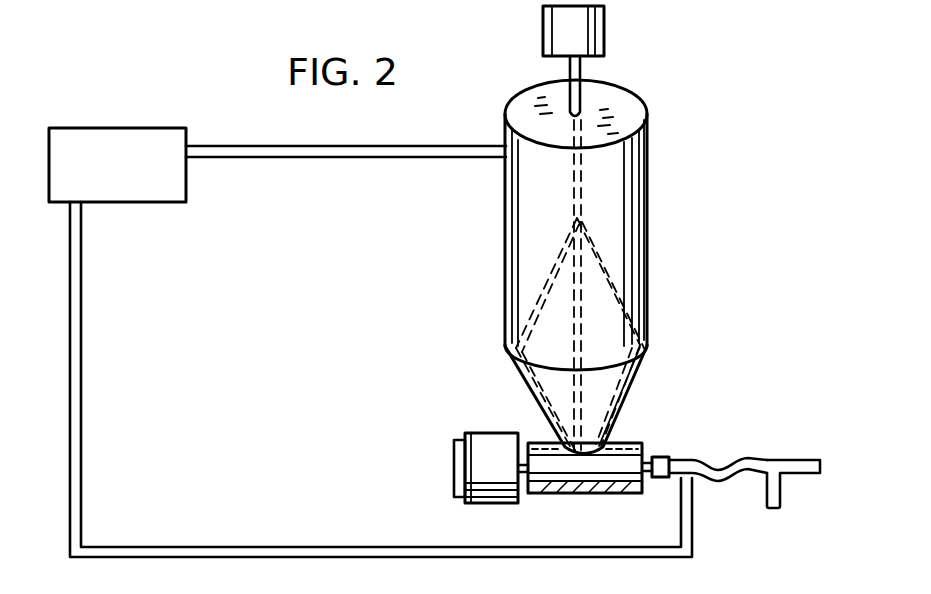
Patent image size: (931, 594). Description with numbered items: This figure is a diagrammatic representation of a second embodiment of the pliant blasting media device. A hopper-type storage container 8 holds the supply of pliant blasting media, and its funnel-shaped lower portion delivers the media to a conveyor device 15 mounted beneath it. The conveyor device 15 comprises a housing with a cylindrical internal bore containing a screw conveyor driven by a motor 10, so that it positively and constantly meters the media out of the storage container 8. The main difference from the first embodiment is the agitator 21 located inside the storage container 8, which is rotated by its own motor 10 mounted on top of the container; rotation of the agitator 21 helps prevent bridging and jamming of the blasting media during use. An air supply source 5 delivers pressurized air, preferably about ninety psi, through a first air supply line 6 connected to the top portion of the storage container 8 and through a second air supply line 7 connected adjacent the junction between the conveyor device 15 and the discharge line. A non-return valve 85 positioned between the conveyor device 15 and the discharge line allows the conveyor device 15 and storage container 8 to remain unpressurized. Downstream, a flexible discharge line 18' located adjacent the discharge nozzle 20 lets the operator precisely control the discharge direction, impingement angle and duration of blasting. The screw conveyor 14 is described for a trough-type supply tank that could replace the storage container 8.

The air supply source 5 is at (118, 127).
The first air supply line 6 is at (348, 145).
The second air supply line 7 is at (307, 547).
The storage container 8 is at (505, 265).
The motor 10 is at (604, 40).
The screw conveyor 14 is at (618, 445).
The conveyor device 15 is at (609, 495).
The flexible discharge line 18' is at (718, 433).
The discharge nozzle 20 is at (783, 458).
The agitator 21 is at (603, 252).
The non-return valve 85 is at (660, 457).